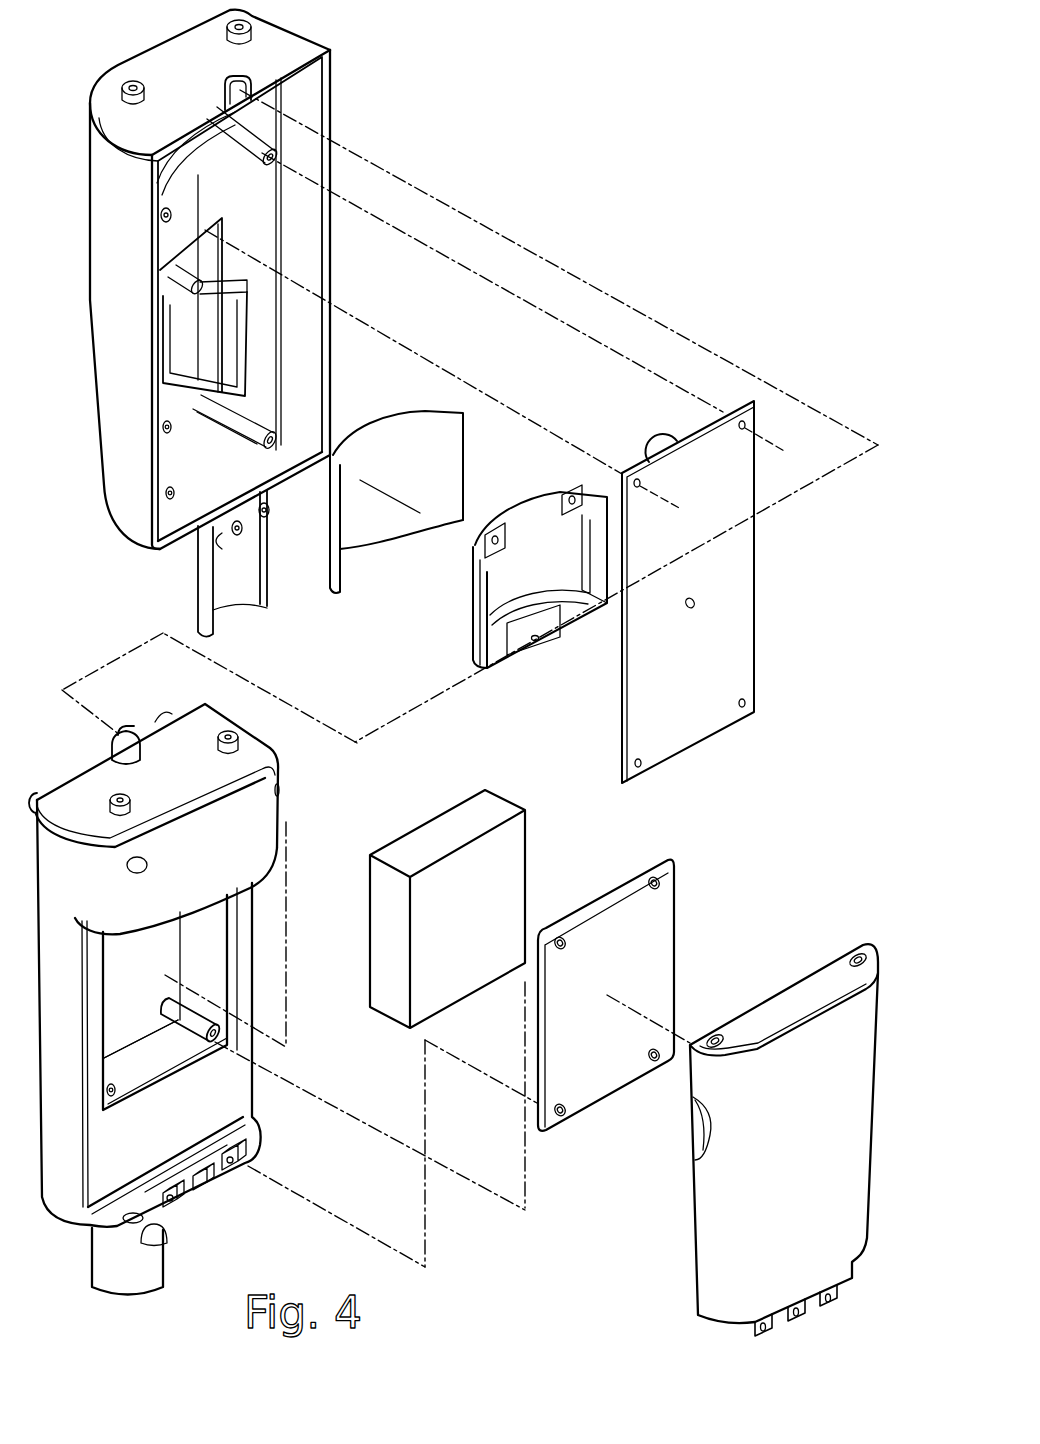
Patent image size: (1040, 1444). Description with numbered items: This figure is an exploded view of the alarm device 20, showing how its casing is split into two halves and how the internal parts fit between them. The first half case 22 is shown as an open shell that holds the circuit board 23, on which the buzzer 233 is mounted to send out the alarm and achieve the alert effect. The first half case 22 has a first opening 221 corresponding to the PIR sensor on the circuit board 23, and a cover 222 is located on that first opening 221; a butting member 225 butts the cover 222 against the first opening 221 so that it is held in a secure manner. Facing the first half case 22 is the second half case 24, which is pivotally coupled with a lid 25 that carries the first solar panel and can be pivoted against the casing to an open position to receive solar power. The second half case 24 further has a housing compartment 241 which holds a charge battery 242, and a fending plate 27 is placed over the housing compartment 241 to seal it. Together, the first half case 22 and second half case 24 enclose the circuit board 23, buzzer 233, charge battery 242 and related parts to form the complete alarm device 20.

The alarm device 20 is at (583, 211).
The first half case 22 is at (110, 214).
The first opening 221 is at (150, 388).
The cover 222 is at (432, 420).
The butting member 225 is at (531, 510).
The buzzer 233 is at (662, 440).
The circuit board 23 is at (717, 737).
The second half case 24 is at (283, 795).
The housing compartment 241 is at (137, 1020).
The charge battery 242 is at (500, 868).
The fending plate 27 is at (577, 1090).
The lid 25 is at (717, 1272).